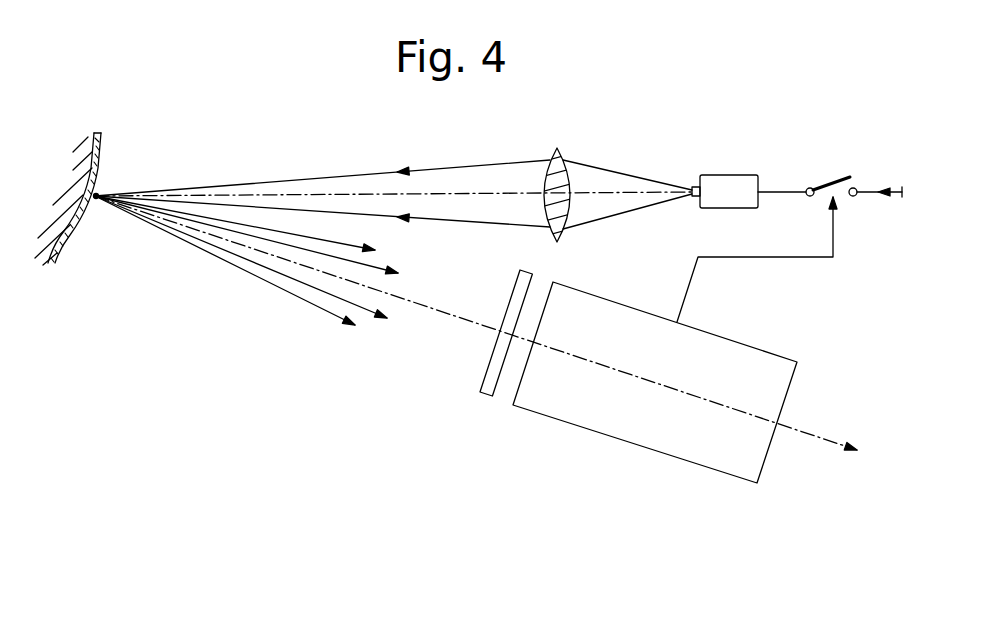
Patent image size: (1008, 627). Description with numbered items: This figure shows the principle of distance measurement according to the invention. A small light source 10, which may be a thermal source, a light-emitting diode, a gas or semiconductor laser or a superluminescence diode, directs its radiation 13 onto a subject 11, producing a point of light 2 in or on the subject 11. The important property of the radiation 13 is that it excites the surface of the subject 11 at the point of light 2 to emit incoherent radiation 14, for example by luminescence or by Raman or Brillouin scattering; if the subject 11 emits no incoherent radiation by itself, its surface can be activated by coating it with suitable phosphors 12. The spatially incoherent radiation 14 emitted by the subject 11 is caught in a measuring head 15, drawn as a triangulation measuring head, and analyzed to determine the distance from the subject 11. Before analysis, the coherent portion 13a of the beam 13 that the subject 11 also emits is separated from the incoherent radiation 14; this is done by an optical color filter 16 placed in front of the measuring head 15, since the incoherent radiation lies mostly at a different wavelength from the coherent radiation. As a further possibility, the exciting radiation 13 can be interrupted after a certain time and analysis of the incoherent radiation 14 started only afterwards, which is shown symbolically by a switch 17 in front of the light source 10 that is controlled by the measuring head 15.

The subject 11 is at (80, 143).
The phosphors 12 is at (101, 152).
The point of light 2 is at (97, 193).
The radiation 13 is at (298, 178).
The incoherent radiation 14 is at (218, 260).
The coherent portion 13a is at (303, 283).
The light source 10 is at (725, 192).
The switch 17 is at (837, 172).
The optical color filter 16 is at (487, 387).
The measuring head 15 is at (612, 417).